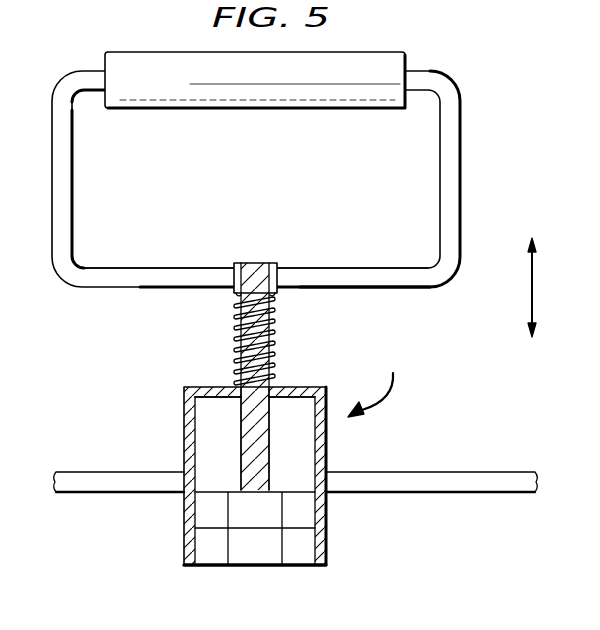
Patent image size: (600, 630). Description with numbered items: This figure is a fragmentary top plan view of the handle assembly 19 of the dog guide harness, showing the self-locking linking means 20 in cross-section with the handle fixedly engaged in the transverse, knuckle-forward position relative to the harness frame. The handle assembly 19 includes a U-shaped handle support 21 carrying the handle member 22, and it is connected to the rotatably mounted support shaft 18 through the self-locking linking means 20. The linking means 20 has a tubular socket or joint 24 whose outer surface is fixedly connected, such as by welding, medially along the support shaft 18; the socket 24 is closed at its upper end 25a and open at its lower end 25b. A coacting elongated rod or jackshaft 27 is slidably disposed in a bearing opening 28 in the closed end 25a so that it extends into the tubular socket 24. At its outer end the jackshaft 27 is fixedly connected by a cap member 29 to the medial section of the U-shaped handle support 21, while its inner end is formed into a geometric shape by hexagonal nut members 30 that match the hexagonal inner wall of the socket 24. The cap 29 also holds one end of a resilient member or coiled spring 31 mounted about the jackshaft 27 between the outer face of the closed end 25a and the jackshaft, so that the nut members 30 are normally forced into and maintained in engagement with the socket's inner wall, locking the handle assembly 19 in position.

The support shaft member 18 is at (427, 479).
The handle assembly 19 is at (467, 201).
The self-locking linking means 20 is at (376, 381).
The U-shaped handle support 21 is at (417, 276).
The handle member 22 is at (322, 93).
The tubular socket or joint 24 is at (321, 455).
The closed end 25a is at (283, 393).
The open end 25b is at (200, 556).
The elongated rod or jackshaft 27 is at (250, 418).
The bearing opening 28 is at (275, 392).
The cap member 29 is at (258, 268).
The hexagonal nut members 30 is at (304, 521).
The resilient member or coiled spring 31 is at (272, 324).